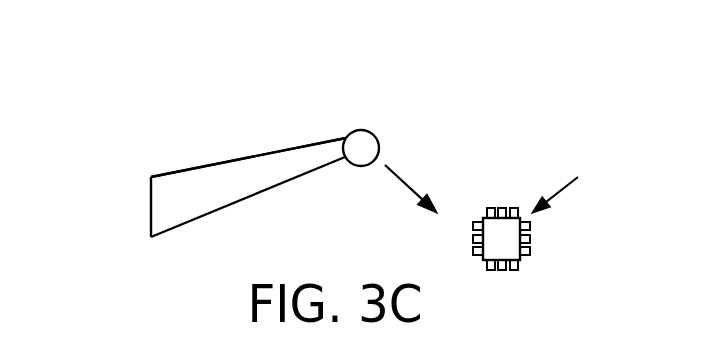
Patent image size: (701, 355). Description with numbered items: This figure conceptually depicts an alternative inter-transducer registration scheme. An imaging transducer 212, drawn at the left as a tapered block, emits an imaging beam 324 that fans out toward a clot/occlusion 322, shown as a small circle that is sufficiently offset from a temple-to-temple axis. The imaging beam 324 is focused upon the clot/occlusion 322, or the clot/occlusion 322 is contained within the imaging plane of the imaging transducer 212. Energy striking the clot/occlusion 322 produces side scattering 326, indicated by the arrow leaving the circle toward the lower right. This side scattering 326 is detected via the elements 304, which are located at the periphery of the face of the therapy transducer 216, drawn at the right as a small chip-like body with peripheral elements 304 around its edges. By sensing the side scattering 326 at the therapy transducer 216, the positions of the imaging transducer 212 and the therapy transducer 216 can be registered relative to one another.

The imaging transducer 212 is at (150, 203).
The imaging beam 324 is at (255, 153).
The clot/occlusion 322 is at (361, 129).
The side scattering 326 is at (407, 178).
The therapy transducer 216 is at (578, 185).
The elements 304 is at (530, 238).